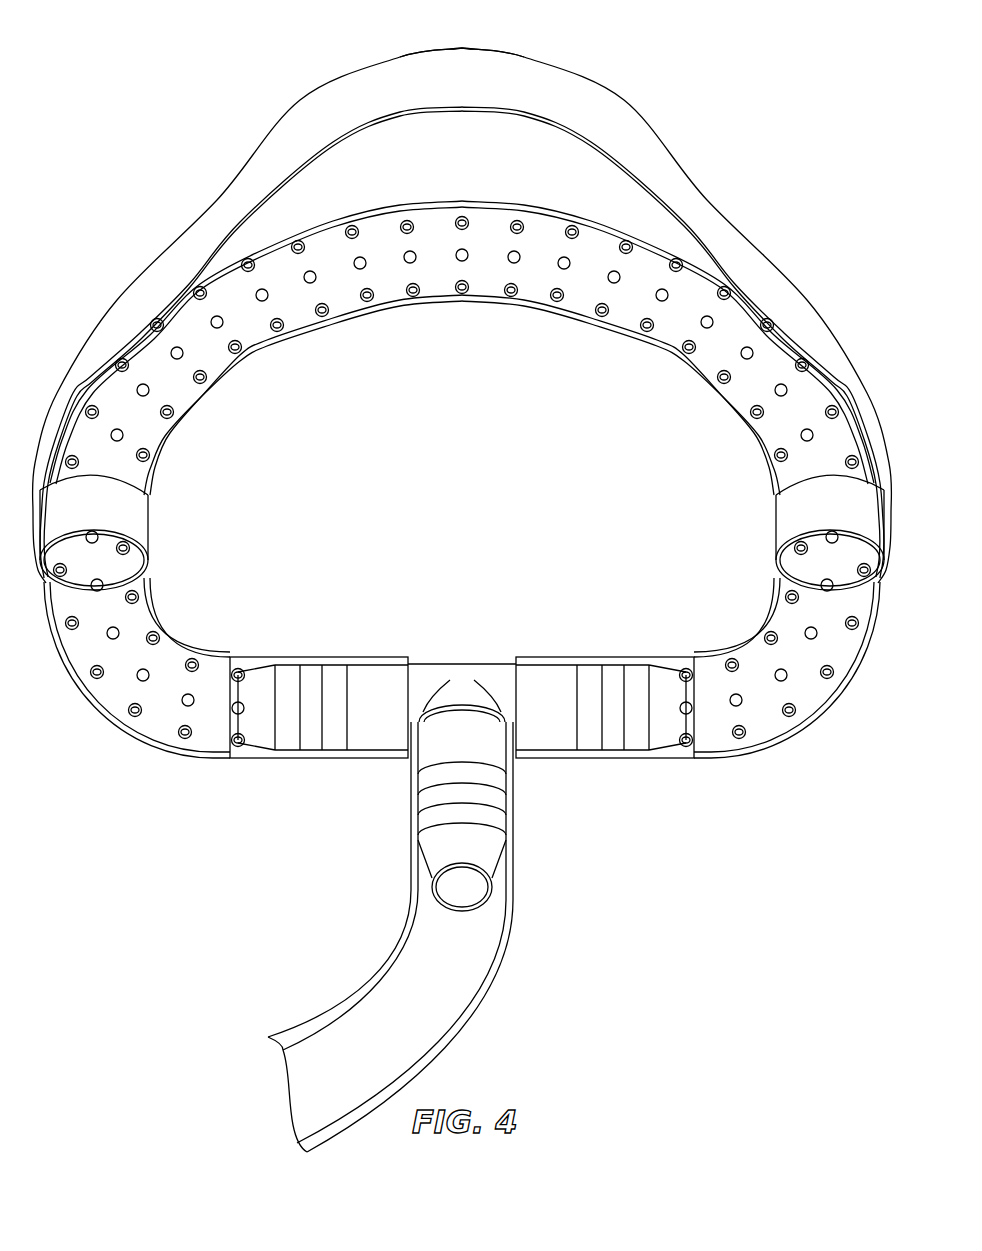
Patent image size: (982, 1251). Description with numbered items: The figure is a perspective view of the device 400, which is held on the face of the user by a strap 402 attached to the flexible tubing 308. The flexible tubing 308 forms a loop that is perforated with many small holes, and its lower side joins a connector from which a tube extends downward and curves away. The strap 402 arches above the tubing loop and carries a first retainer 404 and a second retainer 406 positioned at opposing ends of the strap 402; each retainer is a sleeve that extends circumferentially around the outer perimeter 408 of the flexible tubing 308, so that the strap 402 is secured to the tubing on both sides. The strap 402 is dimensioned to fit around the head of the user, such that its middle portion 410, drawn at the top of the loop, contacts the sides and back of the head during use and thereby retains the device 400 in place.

The flexible tubing 308 is at (534, 312).
The device 400 is at (228, 657).
The strap 402 is at (559, 75).
The first retainer 404 is at (152, 507).
The second retainer 406 is at (771, 507).
The outer perimeter 408 is at (759, 618).
The middle portion 410 is at (445, 50).